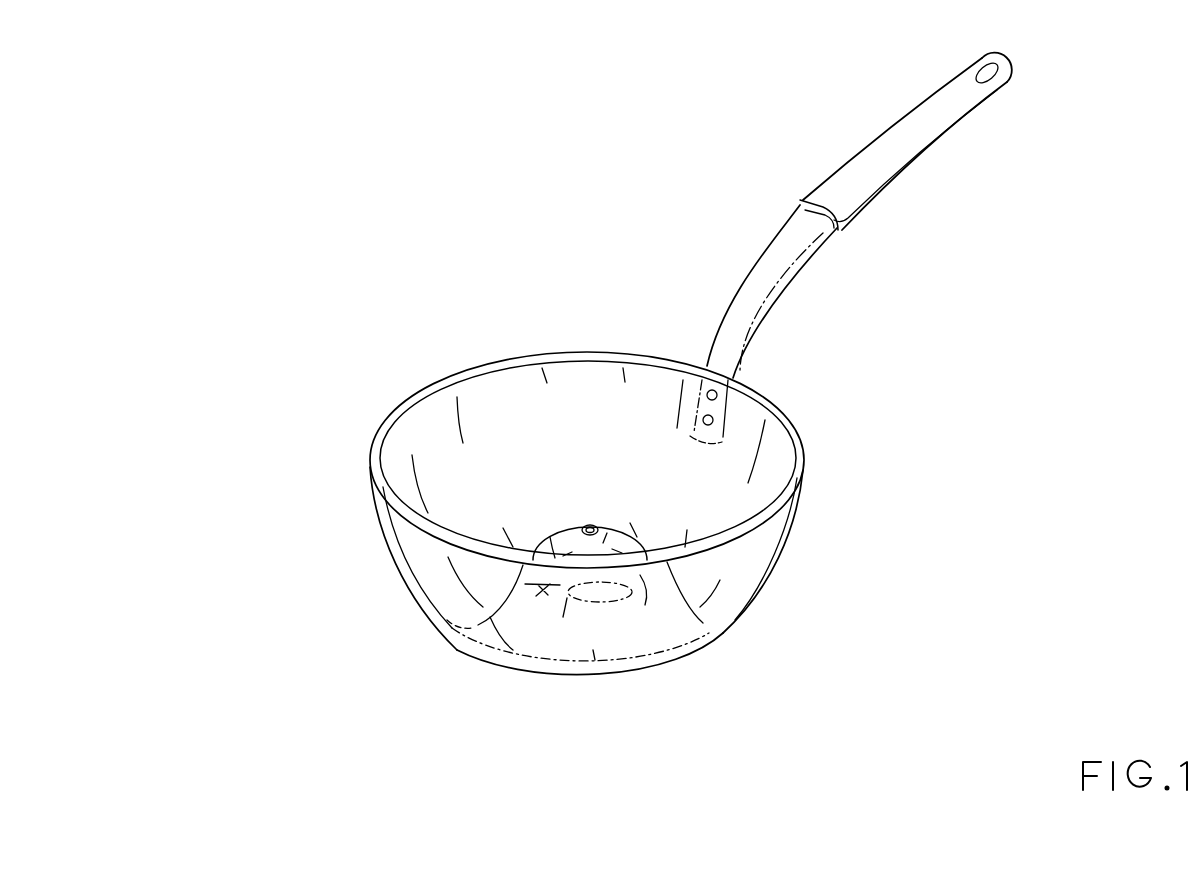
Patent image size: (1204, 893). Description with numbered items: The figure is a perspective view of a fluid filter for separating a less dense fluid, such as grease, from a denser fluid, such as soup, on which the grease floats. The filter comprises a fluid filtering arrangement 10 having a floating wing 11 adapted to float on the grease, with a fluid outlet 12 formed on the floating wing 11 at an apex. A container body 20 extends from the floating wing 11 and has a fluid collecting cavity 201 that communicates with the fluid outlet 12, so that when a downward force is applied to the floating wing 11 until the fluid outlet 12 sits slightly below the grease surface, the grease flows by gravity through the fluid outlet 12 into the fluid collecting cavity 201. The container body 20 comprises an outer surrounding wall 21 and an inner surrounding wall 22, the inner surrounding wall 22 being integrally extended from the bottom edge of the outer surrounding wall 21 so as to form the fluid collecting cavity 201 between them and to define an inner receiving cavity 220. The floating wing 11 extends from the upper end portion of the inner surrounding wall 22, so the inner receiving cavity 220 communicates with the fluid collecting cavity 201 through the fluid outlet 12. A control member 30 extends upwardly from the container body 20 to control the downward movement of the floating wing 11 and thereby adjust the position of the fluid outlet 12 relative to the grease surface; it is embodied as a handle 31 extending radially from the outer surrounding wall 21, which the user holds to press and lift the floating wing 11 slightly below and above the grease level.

The fluid filtering arrangement 10 is at (402, 212).
The floating wing 11 is at (603, 527).
The fluid outlet 12 is at (587, 523).
The container body 20 is at (920, 545).
The fluid collecting cavity 201 is at (468, 532).
The outer surrounding wall 21 is at (777, 567).
The inner surrounding wall 22 is at (627, 540).
The inner receiving cavity 220 is at (591, 634).
The control member 30 is at (1007, 300).
The handle 31 is at (747, 310).